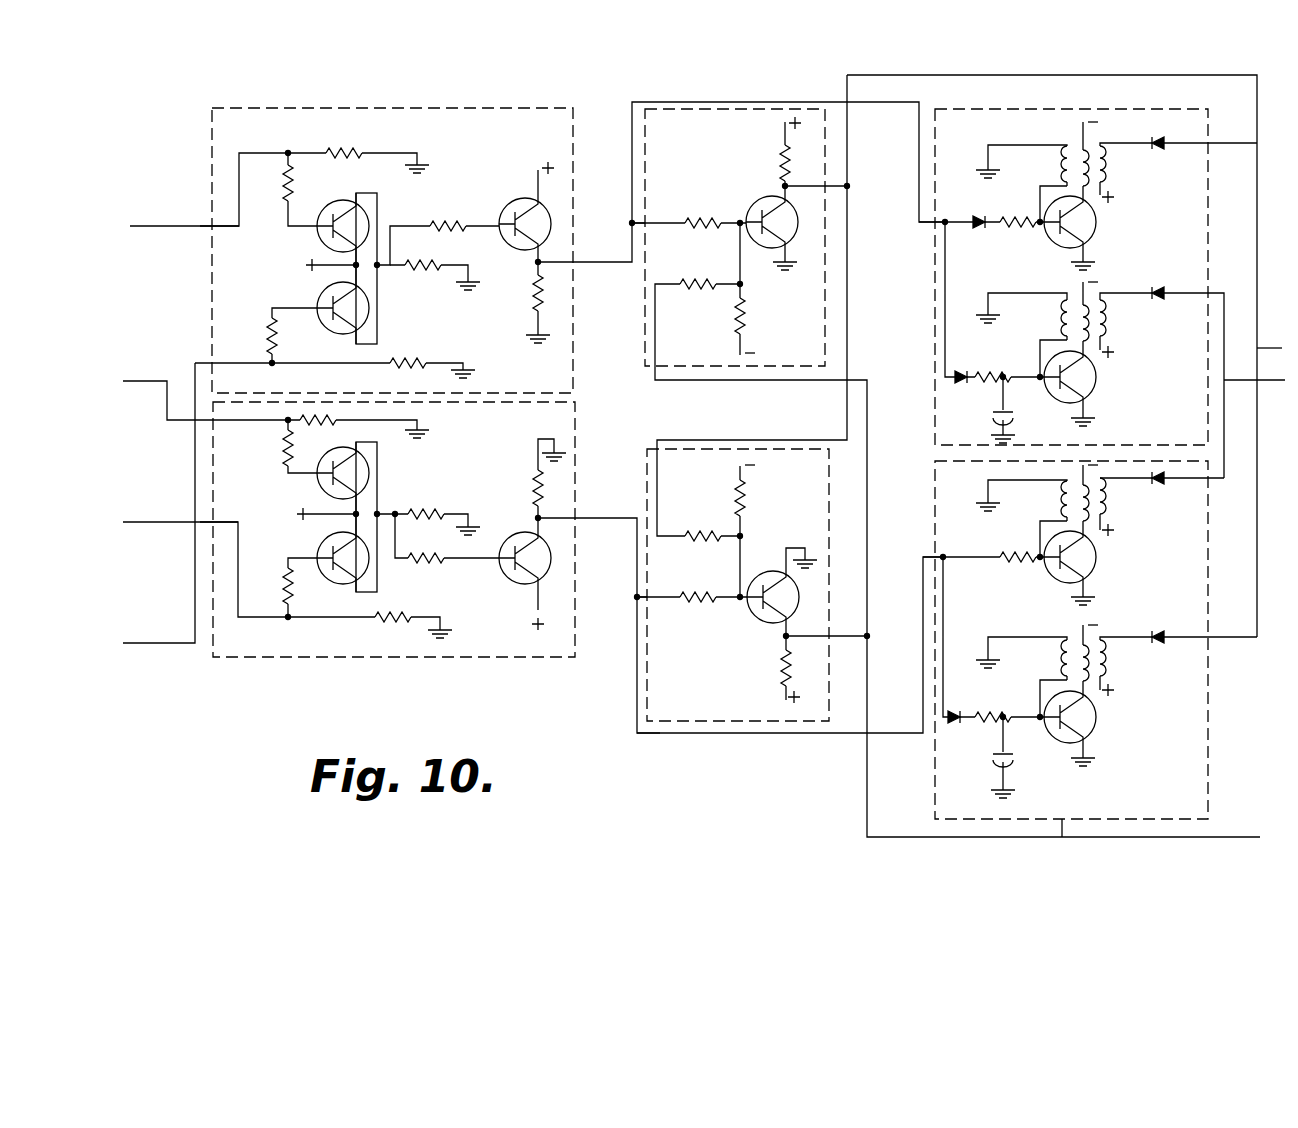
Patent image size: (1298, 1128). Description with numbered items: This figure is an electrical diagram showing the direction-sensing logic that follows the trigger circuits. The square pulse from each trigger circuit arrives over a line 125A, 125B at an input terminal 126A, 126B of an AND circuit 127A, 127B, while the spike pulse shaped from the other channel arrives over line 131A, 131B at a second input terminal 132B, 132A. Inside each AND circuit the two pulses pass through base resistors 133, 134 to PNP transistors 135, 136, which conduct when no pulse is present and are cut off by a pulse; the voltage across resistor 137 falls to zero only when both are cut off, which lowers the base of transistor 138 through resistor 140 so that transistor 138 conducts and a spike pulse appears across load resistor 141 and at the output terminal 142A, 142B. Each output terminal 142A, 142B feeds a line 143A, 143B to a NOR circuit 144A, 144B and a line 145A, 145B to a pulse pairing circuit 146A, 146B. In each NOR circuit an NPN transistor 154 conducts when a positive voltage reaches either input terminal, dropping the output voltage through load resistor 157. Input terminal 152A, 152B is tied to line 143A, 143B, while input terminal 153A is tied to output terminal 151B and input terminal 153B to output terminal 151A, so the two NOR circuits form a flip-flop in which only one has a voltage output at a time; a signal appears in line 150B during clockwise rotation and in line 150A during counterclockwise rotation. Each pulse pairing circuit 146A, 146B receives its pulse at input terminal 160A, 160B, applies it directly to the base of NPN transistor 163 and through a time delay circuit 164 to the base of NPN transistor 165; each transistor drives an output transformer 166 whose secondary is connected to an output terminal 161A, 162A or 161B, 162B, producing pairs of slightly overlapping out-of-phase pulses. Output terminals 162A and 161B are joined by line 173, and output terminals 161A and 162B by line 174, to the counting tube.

The line 125A is at (134, 226).
The line 125B is at (127, 522).
The input terminal 126A is at (210, 226).
The input terminal 126B is at (214, 524).
The AND circuit 127A is at (350, 108).
The AND circuit 127B is at (330, 657).
The line 131A is at (132, 381).
The line 131B is at (141, 645).
The second input terminal 132A is at (211, 363).
The second input terminal 132B is at (214, 421).
The base resistor 133 is at (282, 193).
The base resistor 134 is at (268, 338).
The PNP transistor 135 is at (328, 205).
The PNP transistor 136 is at (323, 326).
The resistor 137 is at (423, 270).
The transistor 138 is at (512, 202).
The resistor 140 is at (447, 212).
The load resistor 141 is at (535, 312).
The output terminal 142A is at (573, 262).
The output terminal 142B is at (575, 518).
The line 143A is at (645, 224).
The line 143B is at (646, 600).
The NOR circuit 144A is at (692, 381).
The NOR circuit 144B is at (652, 723).
The line 145A is at (765, 108).
The line 145B is at (822, 736).
The pulse pairing circuit 146A is at (933, 301).
The pulse pairing circuit 146B is at (1062, 820).
The line 150A is at (1165, 76).
The line 150B is at (1152, 838).
The output terminal 151A is at (828, 187).
The output terminal 151B is at (828, 636).
The input terminal 152A is at (646, 224).
The input terminal 152B is at (646, 598).
The input terminal 153A is at (656, 367).
The input terminal 153B is at (658, 450).
The NPN transistor 154 is at (762, 249).
The load resistor 157 is at (783, 158).
The input terminal 160A is at (935, 223).
The input terminal 160B is at (942, 557).
The output terminal 161A is at (1210, 144).
The output terminal 161B is at (1210, 480).
The output terminal 162A is at (1211, 293).
The output terminal 162B is at (1211, 638).
The NPN transistor 163 is at (1098, 558).
The time delay circuit 164 is at (996, 731).
The NPN transistor 165 is at (1098, 710).
The output transformer 166 is at (1106, 500).
The line 173 is at (1235, 381).
The line 174 is at (1257, 348).